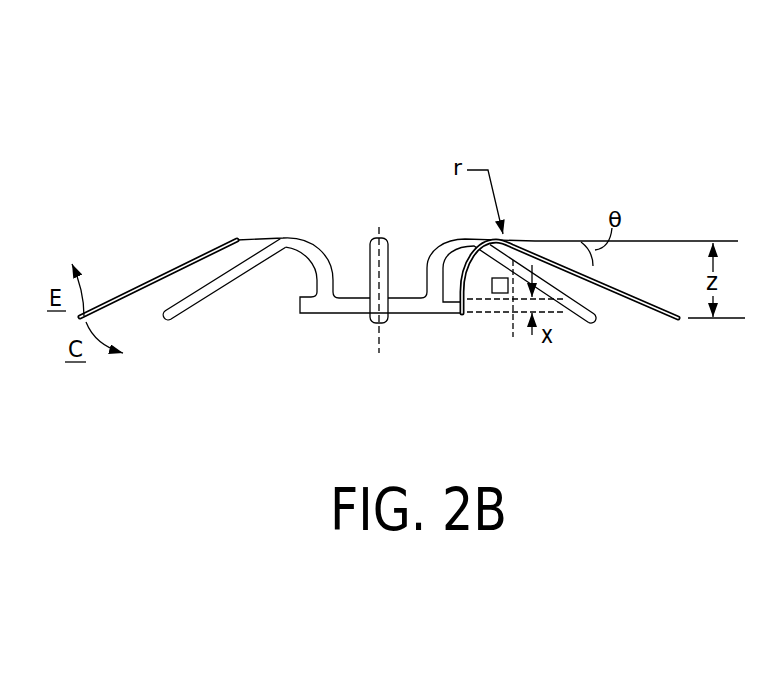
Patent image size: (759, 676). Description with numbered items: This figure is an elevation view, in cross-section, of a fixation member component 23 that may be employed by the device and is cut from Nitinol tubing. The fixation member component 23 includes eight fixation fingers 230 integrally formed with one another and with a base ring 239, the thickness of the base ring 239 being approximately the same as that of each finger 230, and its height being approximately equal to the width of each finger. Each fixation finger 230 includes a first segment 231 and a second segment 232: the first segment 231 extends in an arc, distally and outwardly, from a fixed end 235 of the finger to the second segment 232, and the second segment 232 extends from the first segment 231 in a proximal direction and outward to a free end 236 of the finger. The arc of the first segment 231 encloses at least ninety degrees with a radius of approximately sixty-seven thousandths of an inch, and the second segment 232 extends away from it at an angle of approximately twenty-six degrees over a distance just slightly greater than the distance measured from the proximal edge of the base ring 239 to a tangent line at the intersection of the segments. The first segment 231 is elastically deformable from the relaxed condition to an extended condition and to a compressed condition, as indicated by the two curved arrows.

The fixation member component 23 is at (299, 116).
The fixation finger 230 is at (440, 240).
The first segment 231 is at (497, 238).
The second segment 232 is at (639, 297).
The fixed end 235 is at (461, 299).
The free end 236 is at (678, 318).
The base ring 239 is at (353, 304).